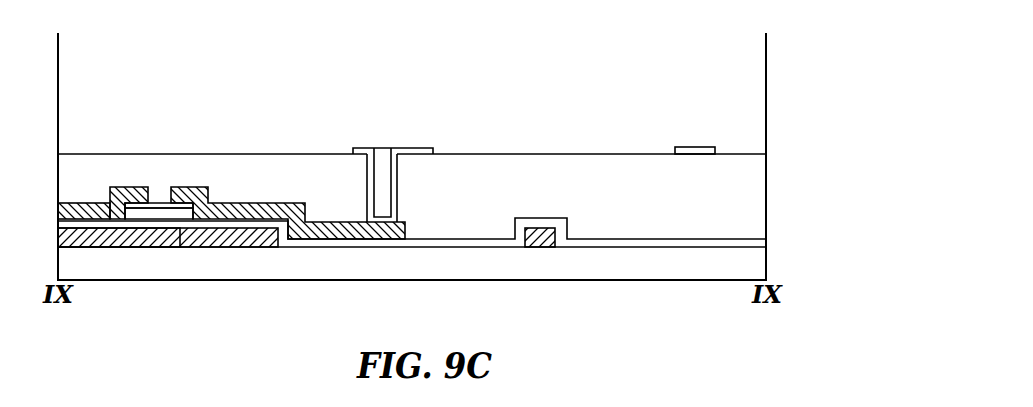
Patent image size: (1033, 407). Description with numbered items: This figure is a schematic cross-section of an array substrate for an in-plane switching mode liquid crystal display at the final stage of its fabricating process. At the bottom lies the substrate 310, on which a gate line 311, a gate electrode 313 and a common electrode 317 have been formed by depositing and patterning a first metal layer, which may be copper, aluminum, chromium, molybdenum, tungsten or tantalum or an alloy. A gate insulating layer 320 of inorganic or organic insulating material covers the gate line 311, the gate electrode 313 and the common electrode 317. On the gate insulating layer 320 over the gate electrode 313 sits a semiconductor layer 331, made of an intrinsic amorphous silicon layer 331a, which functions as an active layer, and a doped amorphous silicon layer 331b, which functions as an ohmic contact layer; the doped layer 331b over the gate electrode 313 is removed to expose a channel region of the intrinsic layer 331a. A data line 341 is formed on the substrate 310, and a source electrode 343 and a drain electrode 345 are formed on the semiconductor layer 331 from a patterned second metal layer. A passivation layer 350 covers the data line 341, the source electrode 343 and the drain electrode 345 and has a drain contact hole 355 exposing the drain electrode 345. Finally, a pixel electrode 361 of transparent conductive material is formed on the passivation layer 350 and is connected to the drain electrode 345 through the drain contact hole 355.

The substrate 310 is at (742, 274).
The gate line 311 is at (80, 243).
The gate electrode 313 is at (223, 243).
The common electrode 317 is at (538, 232).
The gate insulating layer 320 is at (760, 242).
The semiconductor layer 331 is at (189, 139).
The intrinsic amorphous silicon layer 331a is at (177, 215).
The doped amorphous silicon layer 331b is at (137, 203).
The data line 341 is at (71, 213).
The source electrode 343 is at (122, 187).
The drain electrode 345 is at (210, 187).
The passivation layer 350 is at (755, 200).
The drain contact hole 355 is at (382, 155).
The pixel electrode 361 is at (418, 148).